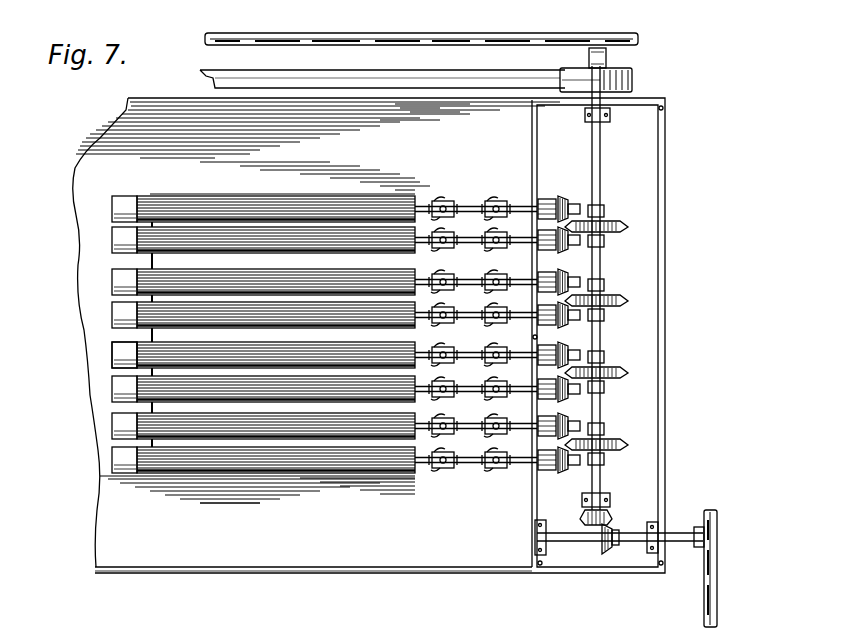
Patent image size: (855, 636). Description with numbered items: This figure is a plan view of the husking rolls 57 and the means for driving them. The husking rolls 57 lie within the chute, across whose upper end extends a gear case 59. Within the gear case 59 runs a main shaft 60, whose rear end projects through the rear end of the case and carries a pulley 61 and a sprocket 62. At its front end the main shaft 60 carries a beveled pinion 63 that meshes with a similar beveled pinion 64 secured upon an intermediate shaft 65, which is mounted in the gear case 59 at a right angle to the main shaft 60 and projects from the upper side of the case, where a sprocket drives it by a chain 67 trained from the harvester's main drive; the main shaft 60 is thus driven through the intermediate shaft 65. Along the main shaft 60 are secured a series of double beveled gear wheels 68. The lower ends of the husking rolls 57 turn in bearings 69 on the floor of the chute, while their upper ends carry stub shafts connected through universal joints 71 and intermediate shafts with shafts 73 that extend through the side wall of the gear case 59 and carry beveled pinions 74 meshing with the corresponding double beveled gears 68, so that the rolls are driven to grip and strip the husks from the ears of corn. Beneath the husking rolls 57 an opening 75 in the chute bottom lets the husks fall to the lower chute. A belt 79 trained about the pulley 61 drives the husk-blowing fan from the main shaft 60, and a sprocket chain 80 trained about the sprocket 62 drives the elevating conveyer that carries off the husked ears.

The husking rolls 57 is at (112, 303).
The gear case 59 is at (566, 575).
The main shaft 60 is at (600, 162).
The pulley 61 is at (636, 78).
The sprocket 62 is at (608, 55).
The beveled pinion 63 is at (582, 519).
The beveled pinion 64 is at (614, 555).
The intermediate shaft 65 is at (628, 533).
The chain 67 is at (700, 606).
The double beveled gear wheels 68 is at (626, 229).
The bearings 69 is at (115, 352).
The universal joints 71 is at (450, 470).
The shafts 73 is at (512, 470).
The beveled pinions 74 is at (560, 478).
The opening 75 is at (390, 476).
The belt 79 is at (450, 77).
The sprocket chain 80 is at (355, 38).